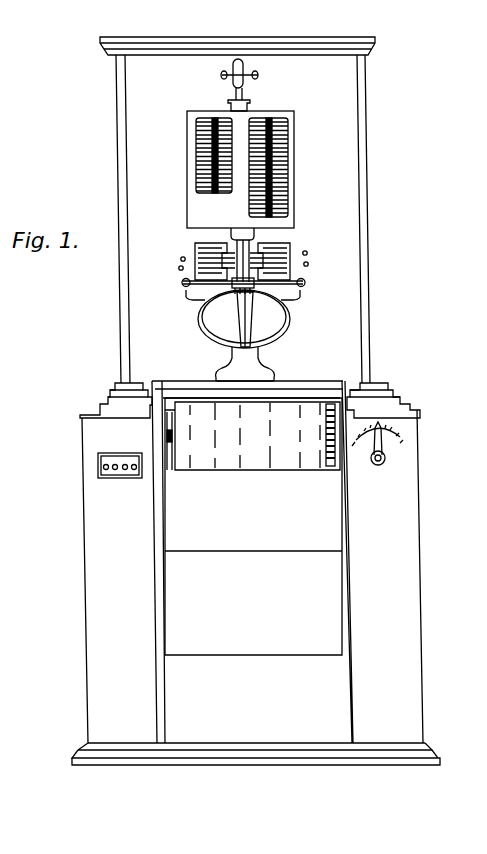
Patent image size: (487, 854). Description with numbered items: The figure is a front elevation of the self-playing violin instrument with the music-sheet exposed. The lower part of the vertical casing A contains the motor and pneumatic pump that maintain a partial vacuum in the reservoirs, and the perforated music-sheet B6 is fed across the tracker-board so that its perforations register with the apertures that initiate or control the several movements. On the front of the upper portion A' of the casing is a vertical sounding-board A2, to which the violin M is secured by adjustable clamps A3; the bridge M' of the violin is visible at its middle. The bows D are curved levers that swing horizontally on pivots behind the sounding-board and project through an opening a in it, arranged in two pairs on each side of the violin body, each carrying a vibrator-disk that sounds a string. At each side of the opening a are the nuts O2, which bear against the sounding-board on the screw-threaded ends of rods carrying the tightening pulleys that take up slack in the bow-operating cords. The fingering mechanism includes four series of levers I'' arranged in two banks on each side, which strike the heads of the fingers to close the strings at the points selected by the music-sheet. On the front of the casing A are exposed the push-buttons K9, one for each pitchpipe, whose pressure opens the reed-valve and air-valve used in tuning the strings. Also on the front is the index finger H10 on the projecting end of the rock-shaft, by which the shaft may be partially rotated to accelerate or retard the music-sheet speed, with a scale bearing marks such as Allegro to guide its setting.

The upper portion of the casing A' is at (95, 219).
The sounding-board A2 is at (344, 163).
The adjustable clamps A3 is at (258, 75).
The levers I'' is at (232, 167).
The bows D is at (195, 250).
The opening a is at (282, 262).
The nuts O2 is at (178, 265).
The bridge M' is at (259, 319).
The violin M is at (235, 335).
The music-sheet B6 is at (232, 433).
The index finger H10 is at (380, 446).
The push-button K9 is at (100, 465).
The casing A is at (239, 573).